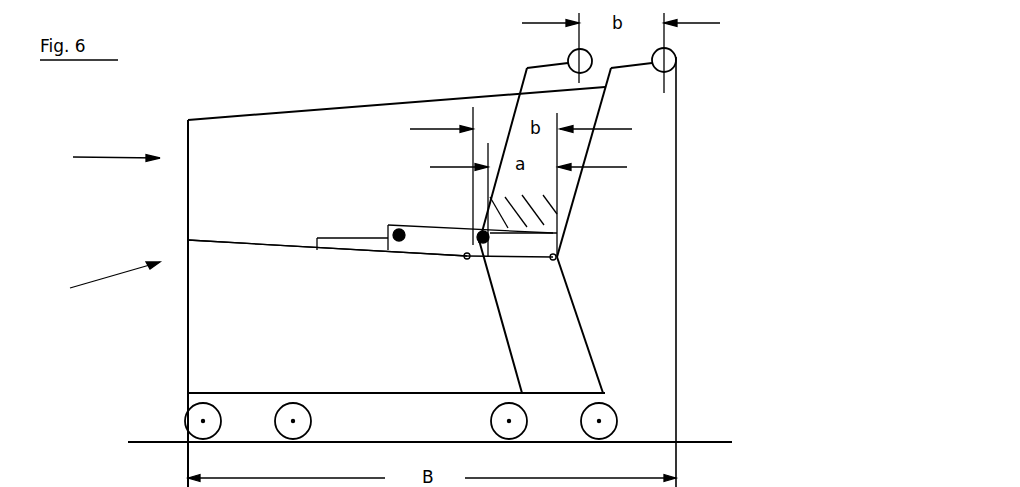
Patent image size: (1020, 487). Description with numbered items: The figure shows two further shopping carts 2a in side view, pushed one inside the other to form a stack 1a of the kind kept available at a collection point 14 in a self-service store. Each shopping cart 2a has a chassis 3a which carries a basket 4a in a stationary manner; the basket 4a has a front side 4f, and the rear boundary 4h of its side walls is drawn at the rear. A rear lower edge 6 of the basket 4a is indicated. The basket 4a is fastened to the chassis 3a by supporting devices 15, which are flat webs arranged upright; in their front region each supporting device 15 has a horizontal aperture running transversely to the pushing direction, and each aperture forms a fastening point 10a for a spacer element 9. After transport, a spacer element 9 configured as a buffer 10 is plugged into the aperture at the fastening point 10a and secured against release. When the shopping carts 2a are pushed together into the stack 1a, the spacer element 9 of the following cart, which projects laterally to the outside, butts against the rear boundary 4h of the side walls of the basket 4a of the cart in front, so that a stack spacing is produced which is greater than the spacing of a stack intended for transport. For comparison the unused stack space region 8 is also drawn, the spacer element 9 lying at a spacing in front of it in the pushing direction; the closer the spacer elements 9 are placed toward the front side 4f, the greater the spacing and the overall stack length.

The stack 1a is at (100, 156).
The shopping cart 2a is at (100, 281).
The collection point 14 is at (126, 200).
The basket 4a is at (315, 123).
The front side 4f is at (187, 216).
The rear boundary 4h is at (510, 118).
The chassis 3a is at (582, 340).
The supporting device 15 is at (435, 242).
The stack space region 8 is at (530, 214).
The rear lower edge 6 is at (466, 259).
The spacer element 9 is at (318, 250).
The buffer 10 is at (338, 291).
The fastening point 10a is at (397, 241).